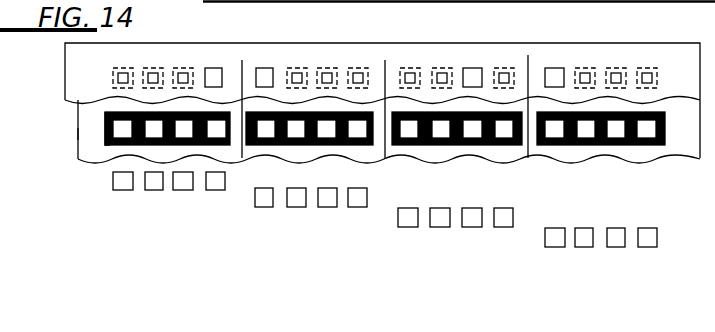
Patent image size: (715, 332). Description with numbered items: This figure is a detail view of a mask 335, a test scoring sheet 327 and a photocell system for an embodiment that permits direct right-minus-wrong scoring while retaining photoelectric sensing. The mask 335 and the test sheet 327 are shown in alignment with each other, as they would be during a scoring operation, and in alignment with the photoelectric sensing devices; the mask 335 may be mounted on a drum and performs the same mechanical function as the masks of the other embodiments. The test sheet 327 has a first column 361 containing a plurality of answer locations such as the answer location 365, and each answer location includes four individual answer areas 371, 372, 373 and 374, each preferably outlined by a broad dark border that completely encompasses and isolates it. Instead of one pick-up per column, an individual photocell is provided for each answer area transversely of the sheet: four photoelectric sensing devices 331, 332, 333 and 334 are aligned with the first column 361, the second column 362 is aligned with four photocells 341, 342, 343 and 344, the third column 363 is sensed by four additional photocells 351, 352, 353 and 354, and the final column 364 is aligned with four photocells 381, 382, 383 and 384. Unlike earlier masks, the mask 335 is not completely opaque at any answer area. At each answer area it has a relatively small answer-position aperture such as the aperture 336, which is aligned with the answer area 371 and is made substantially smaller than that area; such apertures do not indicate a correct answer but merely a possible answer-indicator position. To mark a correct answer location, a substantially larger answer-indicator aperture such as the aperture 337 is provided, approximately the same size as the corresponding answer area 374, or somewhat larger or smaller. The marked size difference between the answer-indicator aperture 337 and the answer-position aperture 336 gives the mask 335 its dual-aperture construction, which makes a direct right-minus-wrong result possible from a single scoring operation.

The test scoring sheet 327 is at (90, 128).
The photoelectric sensing device 331 is at (124, 190).
The photoelectric sensing device 332 is at (152, 190).
The photoelectric sensing device 333 is at (183, 190).
The photoelectric sensing device 334 is at (213, 190).
The mask 335 is at (183, 47).
The answer-position aperture 336 is at (125, 72).
The answer-indicator aperture 337 is at (213, 75).
The photocell 341 is at (267, 207).
The photocell 342 is at (297, 207).
The photocell 343 is at (328, 207).
The photocell 344 is at (360, 207).
The photocell 351 is at (412, 227).
The photocell 352 is at (442, 227).
The photocell 353 is at (472, 227).
The photocell 354 is at (507, 227).
The first column 361 is at (136, 137).
The second column 362 is at (308, 108).
The third column 363 is at (486, 108).
The final column 364 is at (626, 108).
The answer location 365 is at (105, 134).
The answer area 371 is at (110, 146).
The answer area 372 is at (153, 123).
The answer area 373 is at (185, 132).
The answer area 374 is at (215, 130).
The photocell 381 is at (557, 247).
The photocell 382 is at (585, 247).
The photocell 383 is at (617, 247).
The photocell 384 is at (650, 247).